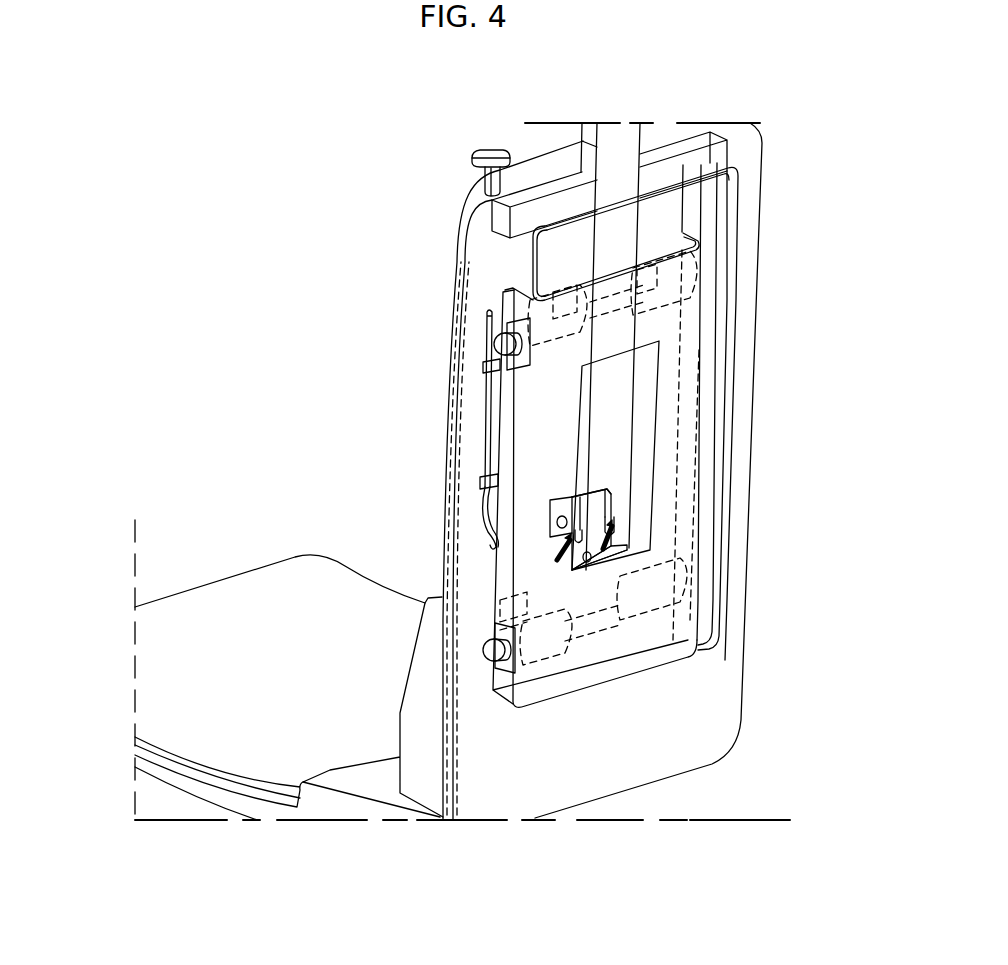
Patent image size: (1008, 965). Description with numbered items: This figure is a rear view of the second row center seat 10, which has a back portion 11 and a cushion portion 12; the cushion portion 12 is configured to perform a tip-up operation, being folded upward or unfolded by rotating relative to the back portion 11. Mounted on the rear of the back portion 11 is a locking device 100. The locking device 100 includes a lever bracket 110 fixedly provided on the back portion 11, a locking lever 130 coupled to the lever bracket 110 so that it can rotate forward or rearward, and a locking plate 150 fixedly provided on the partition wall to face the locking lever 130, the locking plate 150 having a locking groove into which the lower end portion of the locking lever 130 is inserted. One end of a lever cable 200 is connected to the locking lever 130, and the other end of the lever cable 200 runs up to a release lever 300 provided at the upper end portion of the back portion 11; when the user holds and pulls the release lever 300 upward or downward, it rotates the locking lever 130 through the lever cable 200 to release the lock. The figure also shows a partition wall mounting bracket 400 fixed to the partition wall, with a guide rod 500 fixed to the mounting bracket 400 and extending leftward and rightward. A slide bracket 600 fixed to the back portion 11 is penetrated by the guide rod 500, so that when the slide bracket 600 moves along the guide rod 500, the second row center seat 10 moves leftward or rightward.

The second row center seat 10 is at (263, 552).
The back portion 11 is at (460, 283).
The cushion portion 12 is at (160, 688).
The locking device 100 is at (613, 510).
The lever bracket 110 is at (575, 496).
The locking lever 130 is at (597, 547).
The locking plate 150 is at (595, 575).
The lever cable 200 is at (483, 465).
The release lever 300 is at (483, 150).
The partition wall mounting bracket 400 is at (520, 413).
The guide rod 500 is at (640, 325).
The slide bracket 600 is at (567, 290).